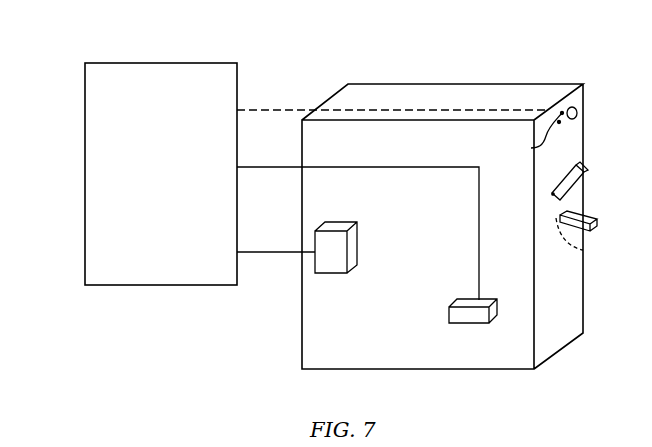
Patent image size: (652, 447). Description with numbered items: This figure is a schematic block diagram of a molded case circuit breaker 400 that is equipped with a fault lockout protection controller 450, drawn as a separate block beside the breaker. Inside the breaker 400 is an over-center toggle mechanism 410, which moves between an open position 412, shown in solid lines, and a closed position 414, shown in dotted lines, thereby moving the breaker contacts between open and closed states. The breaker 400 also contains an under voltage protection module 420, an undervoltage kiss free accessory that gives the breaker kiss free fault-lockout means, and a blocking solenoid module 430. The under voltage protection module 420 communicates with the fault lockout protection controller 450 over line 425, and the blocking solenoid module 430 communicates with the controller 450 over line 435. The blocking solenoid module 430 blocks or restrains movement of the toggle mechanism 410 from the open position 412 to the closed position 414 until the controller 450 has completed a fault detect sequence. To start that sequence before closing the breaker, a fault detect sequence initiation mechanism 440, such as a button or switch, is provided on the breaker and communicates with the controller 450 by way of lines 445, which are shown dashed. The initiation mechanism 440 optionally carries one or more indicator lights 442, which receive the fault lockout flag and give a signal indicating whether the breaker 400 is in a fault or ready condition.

The molded case circuit breaker 400 is at (347, 362).
The over-center toggle mechanism 410 is at (574, 184).
The open position 412 is at (553, 193).
The closed position 414 is at (583, 250).
The under voltage protection module 420 is at (330, 273).
The line 425 is at (262, 253).
The blocking solenoid module 430 is at (447, 317).
The line 435 is at (253, 167).
The fault detect sequence initiation mechanism 440 is at (577, 107).
The indicator light 442 is at (559, 122).
The lines 445 is at (267, 110).
The fault lockout protection controller 450 is at (204, 73).